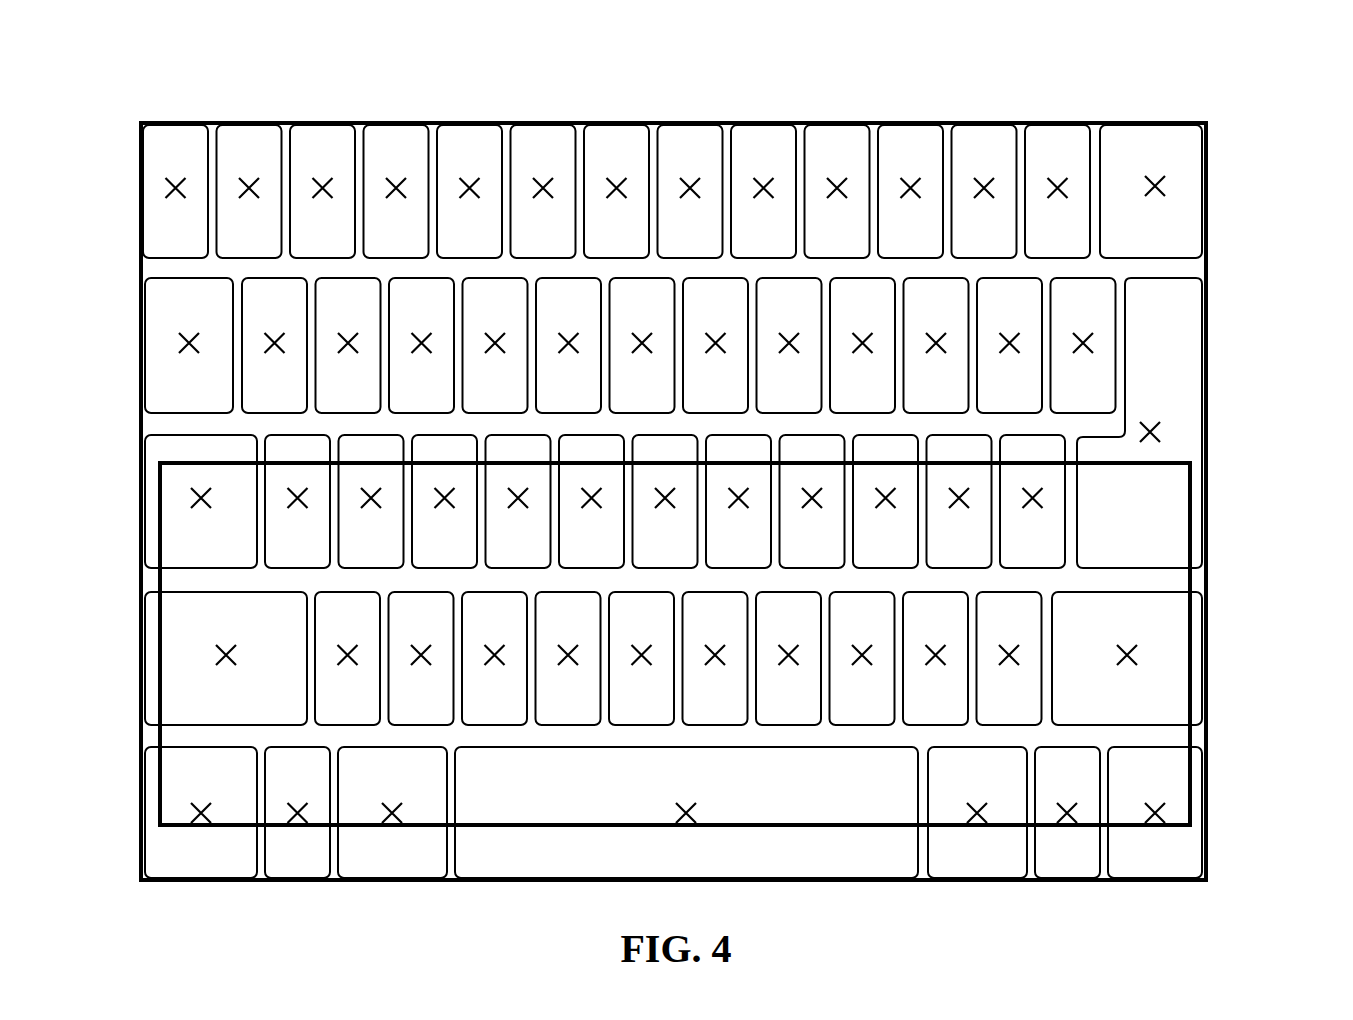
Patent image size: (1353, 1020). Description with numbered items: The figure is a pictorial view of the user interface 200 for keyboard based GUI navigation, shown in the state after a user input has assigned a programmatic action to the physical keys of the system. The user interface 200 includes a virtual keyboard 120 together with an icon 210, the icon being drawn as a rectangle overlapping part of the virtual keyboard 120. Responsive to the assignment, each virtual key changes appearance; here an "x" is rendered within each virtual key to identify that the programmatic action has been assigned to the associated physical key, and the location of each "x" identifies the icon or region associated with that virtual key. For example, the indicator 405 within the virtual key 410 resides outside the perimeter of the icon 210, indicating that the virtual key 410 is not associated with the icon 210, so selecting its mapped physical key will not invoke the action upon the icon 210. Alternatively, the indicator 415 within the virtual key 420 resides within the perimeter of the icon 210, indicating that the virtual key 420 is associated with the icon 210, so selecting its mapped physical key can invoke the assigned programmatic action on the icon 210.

The user interface 200 is at (283, 61).
The virtual keyboard 120 is at (1206, 168).
The virtual key 410 is at (1176, 324).
The indicator 405 is at (1156, 431).
The indicator 415 is at (1043, 507).
The virtual key 420 is at (1042, 548).
The icon 210 is at (675, 644).